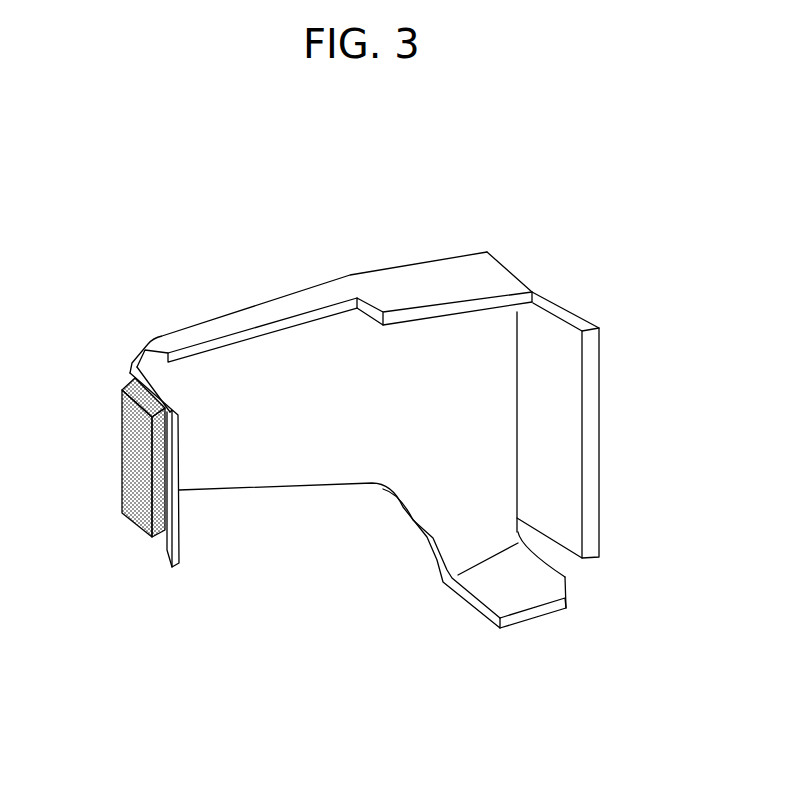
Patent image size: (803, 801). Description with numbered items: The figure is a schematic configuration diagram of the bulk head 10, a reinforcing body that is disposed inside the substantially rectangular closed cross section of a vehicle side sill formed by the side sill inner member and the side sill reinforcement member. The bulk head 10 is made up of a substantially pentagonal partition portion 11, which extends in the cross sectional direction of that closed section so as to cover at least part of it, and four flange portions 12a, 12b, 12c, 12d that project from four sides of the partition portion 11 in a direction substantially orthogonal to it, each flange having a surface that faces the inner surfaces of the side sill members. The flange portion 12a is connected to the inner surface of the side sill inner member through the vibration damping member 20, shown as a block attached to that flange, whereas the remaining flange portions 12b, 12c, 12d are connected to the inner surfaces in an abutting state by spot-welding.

The bulk head 10 is at (586, 207).
The partition portion 11 is at (338, 462).
The flange portion 12a is at (178, 535).
The flange portion 12b is at (373, 280).
The flange portion 12c is at (597, 425).
The flange portion 12d is at (530, 613).
The vibration damping member 20 is at (135, 468).